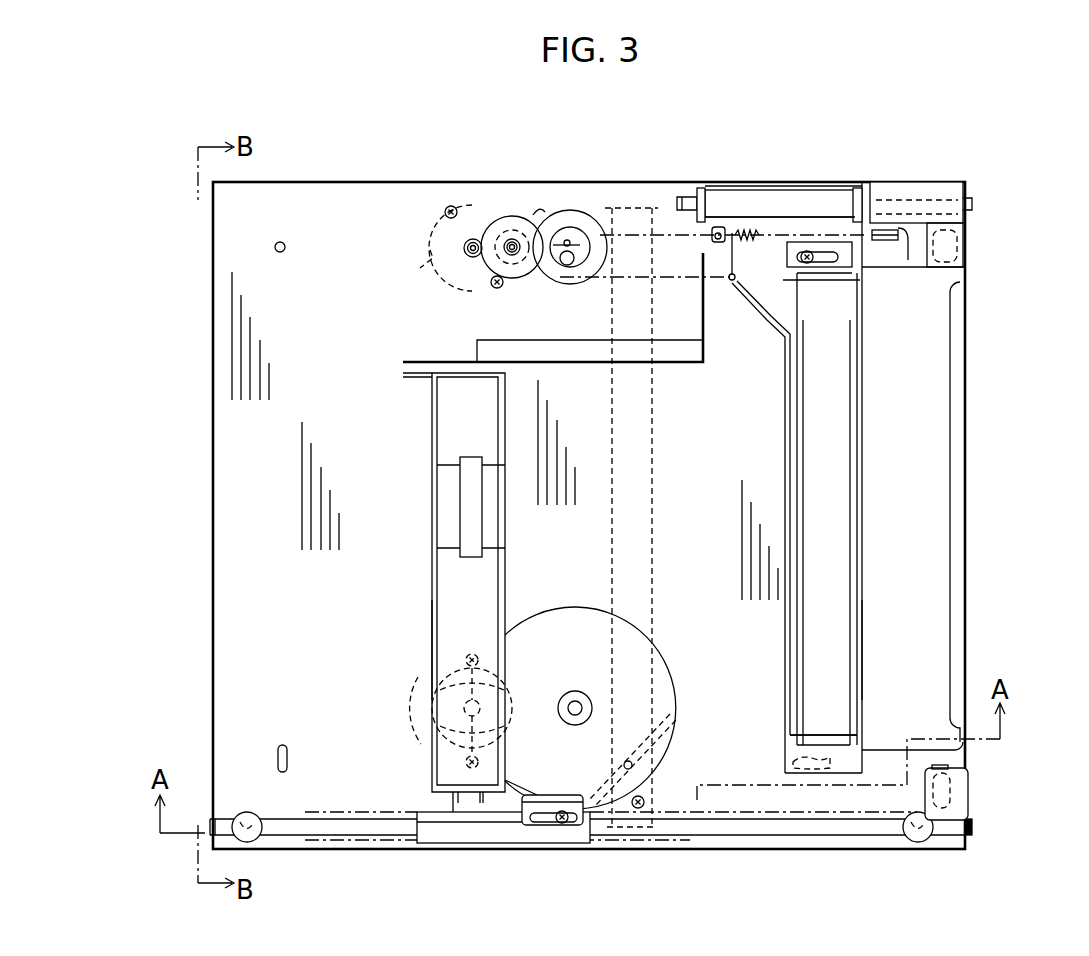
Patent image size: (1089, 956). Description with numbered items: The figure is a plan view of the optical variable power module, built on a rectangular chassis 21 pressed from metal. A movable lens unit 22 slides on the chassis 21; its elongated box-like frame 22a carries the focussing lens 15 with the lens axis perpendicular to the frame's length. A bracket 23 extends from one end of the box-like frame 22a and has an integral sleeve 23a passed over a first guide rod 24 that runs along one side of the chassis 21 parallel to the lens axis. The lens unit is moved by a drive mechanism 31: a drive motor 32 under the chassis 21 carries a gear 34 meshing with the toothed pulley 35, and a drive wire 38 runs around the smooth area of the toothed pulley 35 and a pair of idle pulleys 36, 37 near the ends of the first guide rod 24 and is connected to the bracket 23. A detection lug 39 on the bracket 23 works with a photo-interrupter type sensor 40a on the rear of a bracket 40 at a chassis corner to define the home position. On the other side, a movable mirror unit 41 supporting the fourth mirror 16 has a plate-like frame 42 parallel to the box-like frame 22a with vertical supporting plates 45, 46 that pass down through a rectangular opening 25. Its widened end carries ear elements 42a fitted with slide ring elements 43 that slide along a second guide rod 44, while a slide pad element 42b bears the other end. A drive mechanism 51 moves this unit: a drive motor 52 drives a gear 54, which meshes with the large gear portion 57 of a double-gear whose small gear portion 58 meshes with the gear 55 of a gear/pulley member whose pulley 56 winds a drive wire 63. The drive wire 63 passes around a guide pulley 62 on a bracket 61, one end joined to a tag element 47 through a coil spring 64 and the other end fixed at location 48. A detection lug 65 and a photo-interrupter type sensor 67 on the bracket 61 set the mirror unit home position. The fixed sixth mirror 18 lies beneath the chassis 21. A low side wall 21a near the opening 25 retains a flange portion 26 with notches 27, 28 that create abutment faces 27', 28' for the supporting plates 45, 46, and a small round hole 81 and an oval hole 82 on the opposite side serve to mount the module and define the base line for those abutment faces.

The focussing lens 15 is at (447, 503).
The fourth mirror 16 is at (835, 425).
The sixth mirror 18 is at (653, 542).
The rectangular chassis 21 is at (341, 590).
The side wall 21a is at (977, 525).
The movable lens unit 22 is at (420, 433).
The box-like frame 22a is at (432, 608).
The bracket 23 is at (522, 797).
The sleeve 23a is at (508, 843).
The first guide rod 24 is at (350, 836).
The rectangular opening 25 is at (893, 608).
The flange portion 26 is at (966, 425).
The notch 27 is at (930, 505).
The abutment face 27' is at (996, 297).
The notch 28 is at (969, 757).
The abutment face 28' is at (987, 672).
The drive mechanism 31 is at (580, 596).
The drive motor 32 is at (436, 735).
The gear 34 is at (466, 662).
The toothed pulley 35 is at (678, 680).
The idle pulley 36 is at (250, 812).
The idle pulley 37 is at (920, 842).
The drive wire 38 is at (347, 812).
The detection lug 39 is at (565, 795).
The bracket 40 is at (960, 790).
The photo-interrupter type sensor 40a is at (968, 800).
The movable mirror unit 41 is at (862, 535).
The plate-like frame 42 is at (785, 430).
The ear elements 42a is at (700, 186).
The slide pad element 42b is at (795, 762).
The slide ring element 43 is at (705, 188).
The second guide rod 44 is at (838, 190).
The vertical supporting plate 45 is at (830, 283).
The vertical supporting plate 46 is at (830, 735).
The tag element 47 is at (727, 190).
The wire connection location 48 is at (735, 285).
The drive mechanism 51 is at (551, 216).
The drive motor 52 is at (440, 266).
The gear 54 is at (464, 248).
The gear 55 is at (540, 278).
The pulley 56 is at (567, 266).
The large gear portion 57 is at (505, 218).
The small gear portion 58 is at (518, 225).
The bracket 61 is at (900, 184).
The guide pulley 62 is at (885, 243).
The drive wire 63 is at (773, 190).
The coil spring 64 is at (735, 277).
The detection lug 65 is at (800, 190).
The photo-interrupter type sensor 67 is at (962, 245).
The small round hole 81 is at (281, 253).
The oval hole 82 is at (283, 749).